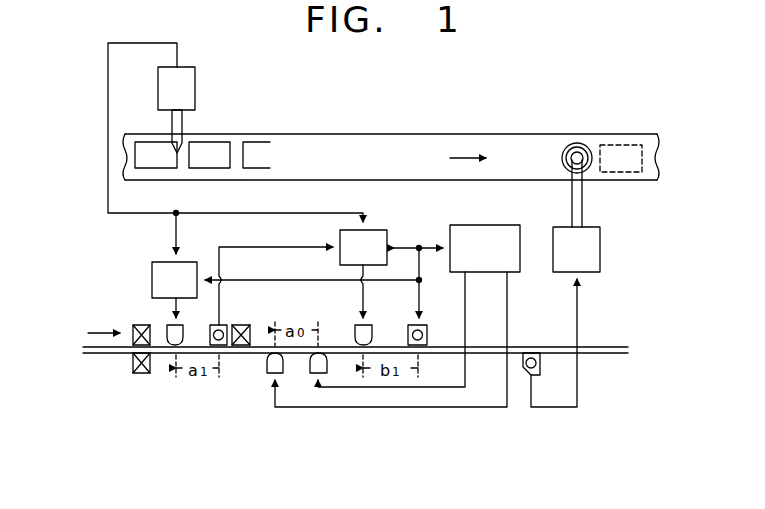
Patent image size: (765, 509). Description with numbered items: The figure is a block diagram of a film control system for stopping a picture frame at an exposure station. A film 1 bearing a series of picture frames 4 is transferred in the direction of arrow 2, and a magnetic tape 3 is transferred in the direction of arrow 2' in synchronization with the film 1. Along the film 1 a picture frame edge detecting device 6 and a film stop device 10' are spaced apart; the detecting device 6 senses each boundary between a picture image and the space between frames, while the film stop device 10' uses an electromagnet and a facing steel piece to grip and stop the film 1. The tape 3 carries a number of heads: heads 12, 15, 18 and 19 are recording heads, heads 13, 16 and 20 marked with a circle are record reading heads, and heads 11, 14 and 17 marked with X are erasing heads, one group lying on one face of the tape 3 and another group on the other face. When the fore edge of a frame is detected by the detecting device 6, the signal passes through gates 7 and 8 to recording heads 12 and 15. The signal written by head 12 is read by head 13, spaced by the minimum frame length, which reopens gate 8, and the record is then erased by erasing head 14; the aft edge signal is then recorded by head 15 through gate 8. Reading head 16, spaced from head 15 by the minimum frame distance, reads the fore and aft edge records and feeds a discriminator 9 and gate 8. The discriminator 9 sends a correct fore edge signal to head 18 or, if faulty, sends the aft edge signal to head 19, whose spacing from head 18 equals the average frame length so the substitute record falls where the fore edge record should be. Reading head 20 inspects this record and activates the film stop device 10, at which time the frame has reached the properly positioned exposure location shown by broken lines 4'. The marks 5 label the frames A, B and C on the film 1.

The film 1 is at (416, 168).
The arrow 2 is at (468, 148).
The arrow 2' is at (99, 324).
The magnetic tape 3 is at (607, 347).
The picture frame 4 is at (203, 135).
The picture frame position shown by broken lines 4' is at (621, 138).
The marks on articles 5 is at (152, 168).
The picture frame edge detecting device 6 is at (195, 73).
The gate 7 is at (198, 265).
The gate 8 is at (390, 240).
The discriminator 9 is at (521, 242).
The film stop device 10 is at (583, 309).
The film stop device 10' is at (578, 165).
The erasing head 11 is at (135, 325).
The recording head 12 is at (169, 326).
The record reading head 13 is at (208, 326).
The erasing head 14 is at (256, 321).
The recording head 15 is at (372, 326).
The record reading head 16 is at (427, 326).
The erasing head 17 is at (133, 373).
The recording head 18 is at (267, 373).
The recording head 19 is at (310, 373).
The reading head 20 is at (540, 374).